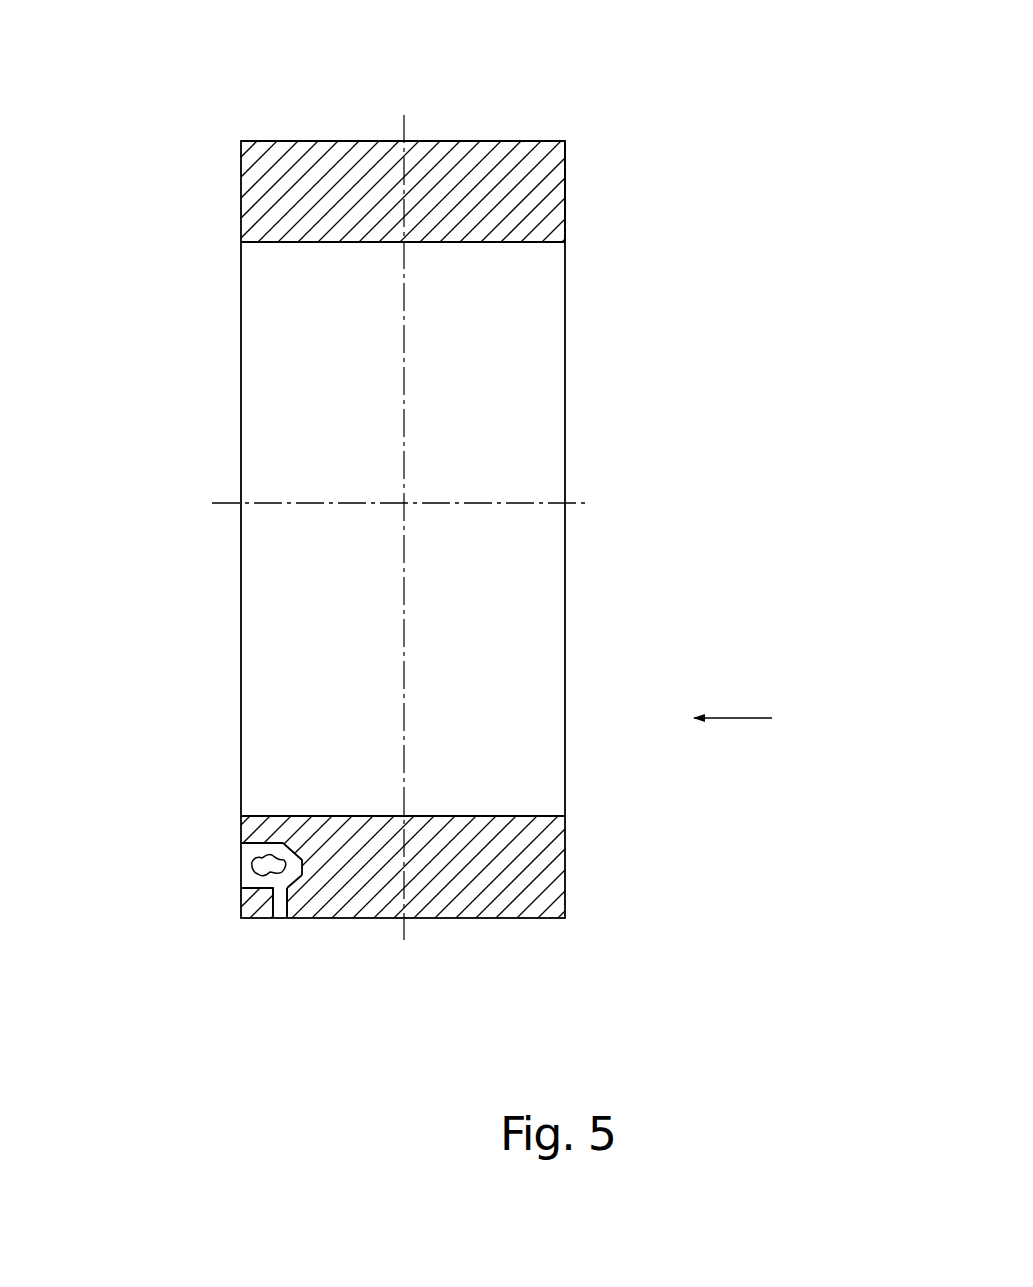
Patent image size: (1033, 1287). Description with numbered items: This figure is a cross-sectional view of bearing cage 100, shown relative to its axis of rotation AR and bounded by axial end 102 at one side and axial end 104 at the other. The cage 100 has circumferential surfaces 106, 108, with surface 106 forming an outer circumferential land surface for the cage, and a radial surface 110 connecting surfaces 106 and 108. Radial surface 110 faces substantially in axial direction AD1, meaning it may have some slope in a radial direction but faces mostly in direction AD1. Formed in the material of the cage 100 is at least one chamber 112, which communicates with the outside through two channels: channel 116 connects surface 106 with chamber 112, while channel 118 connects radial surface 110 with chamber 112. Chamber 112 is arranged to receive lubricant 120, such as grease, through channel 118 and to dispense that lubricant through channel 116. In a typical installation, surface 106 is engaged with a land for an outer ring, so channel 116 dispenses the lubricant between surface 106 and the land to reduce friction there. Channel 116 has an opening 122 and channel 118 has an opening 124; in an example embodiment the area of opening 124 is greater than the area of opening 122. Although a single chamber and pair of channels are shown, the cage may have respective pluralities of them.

The bearing cage 100 is at (627, 100).
The axial end 102 is at (241, 181).
The axial end 104 is at (566, 172).
The circumferential surface 106 is at (257, 141).
The circumferential surface 108 is at (300, 243).
The radial surface 110 is at (242, 910).
The chamber 112 is at (292, 866).
The channel 116 is at (277, 905).
The channel 118 is at (253, 853).
The lubricant 120 is at (285, 875).
The opening 122 is at (285, 895).
The opening 124 is at (250, 863).
The axis of rotation AR is at (232, 503).
The axial direction AD1 is at (740, 718).